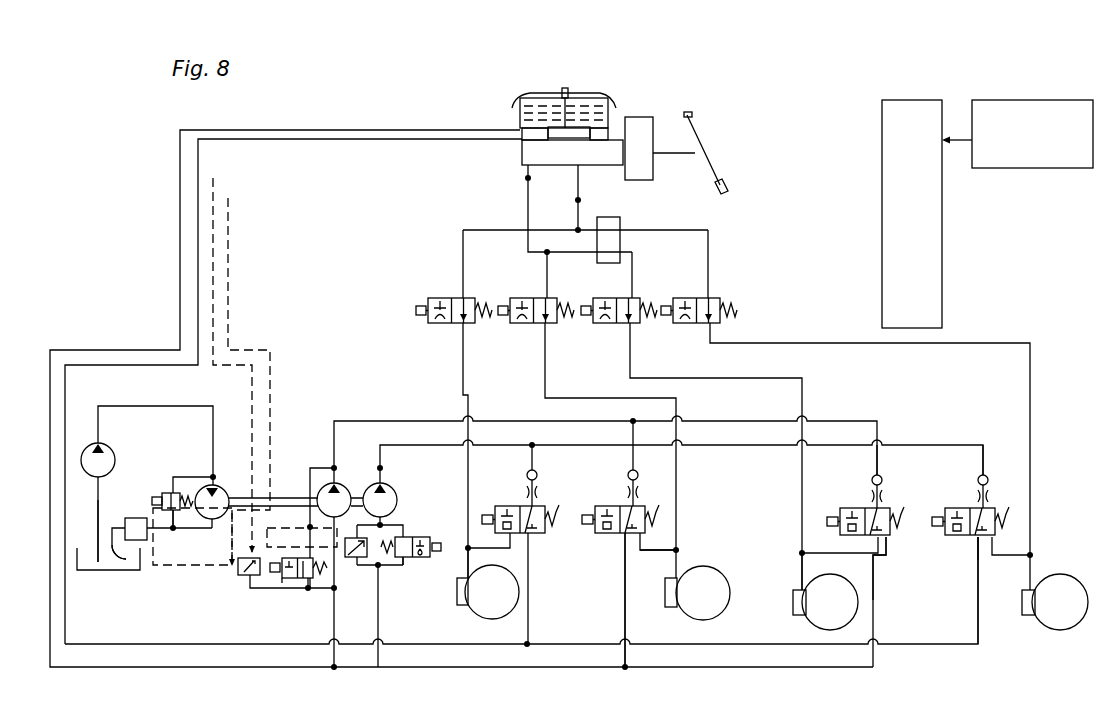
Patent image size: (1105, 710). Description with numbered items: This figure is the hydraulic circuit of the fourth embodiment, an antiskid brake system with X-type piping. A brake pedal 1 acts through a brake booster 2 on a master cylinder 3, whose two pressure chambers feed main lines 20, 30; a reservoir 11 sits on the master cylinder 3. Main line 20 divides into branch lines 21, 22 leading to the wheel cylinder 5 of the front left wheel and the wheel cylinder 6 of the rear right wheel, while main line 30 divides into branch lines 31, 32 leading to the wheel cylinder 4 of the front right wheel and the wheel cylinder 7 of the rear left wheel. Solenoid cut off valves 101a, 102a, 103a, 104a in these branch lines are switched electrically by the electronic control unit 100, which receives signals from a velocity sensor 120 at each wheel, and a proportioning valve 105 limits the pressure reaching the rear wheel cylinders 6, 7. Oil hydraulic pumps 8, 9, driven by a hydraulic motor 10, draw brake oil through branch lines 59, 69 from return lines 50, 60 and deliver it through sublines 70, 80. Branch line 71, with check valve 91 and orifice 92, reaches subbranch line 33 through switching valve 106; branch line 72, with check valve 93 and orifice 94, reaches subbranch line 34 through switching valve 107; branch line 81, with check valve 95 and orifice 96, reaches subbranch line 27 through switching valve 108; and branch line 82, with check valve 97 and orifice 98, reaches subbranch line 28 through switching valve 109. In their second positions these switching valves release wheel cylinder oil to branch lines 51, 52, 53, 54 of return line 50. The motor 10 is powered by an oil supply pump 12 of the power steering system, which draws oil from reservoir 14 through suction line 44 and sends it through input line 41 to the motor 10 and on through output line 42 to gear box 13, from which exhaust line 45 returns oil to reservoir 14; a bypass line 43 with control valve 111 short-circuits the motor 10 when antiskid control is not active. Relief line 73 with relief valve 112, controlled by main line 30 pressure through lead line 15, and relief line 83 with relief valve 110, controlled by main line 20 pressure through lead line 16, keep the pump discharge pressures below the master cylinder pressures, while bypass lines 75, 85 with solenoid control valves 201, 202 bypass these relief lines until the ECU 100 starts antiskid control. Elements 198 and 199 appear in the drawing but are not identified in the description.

The brake pedal 1 is at (729, 186).
The brake booster 2 is at (660, 140).
The master cylinder 3 is at (613, 142).
The wheel cylinder 4 is at (474, 613).
The wheel cylinder 5 is at (714, 572).
The wheel cylinder 6 is at (812, 624).
The wheel cylinder 7 is at (1051, 575).
The oil hydraulic pump 8 is at (396, 490).
The oil hydraulic pump 9 is at (332, 482).
The hydraulic motor 10 is at (223, 488).
The reservoir 11 is at (609, 100).
The oil supply pump 12 is at (110, 450).
The gear box 13 is at (130, 517).
The reservoir 14 is at (103, 572).
The lead line 15 is at (235, 327).
The lead line 16 is at (237, 280).
The main line 20 is at (528, 218).
The branch line 21 is at (593, 398).
The branch line 22 is at (741, 380).
The subbranch line 27 is at (660, 550).
The subbranch line 28 is at (800, 560).
The main line 30 is at (578, 190).
The branch line 31 is at (463, 380).
The branch line 32 is at (949, 343).
The subbranch line 33 is at (468, 530).
The subbranch line 34 is at (1007, 555).
The input line 41 is at (198, 406).
The output line 42 is at (194, 537).
The bypass line 43 is at (170, 492).
The suction line 44 is at (94, 504).
The exhaust line 45 is at (132, 572).
The return line 50 is at (358, 140).
The branch line 51 is at (526, 625).
The branch line 52 is at (978, 640).
The branch line 53 is at (625, 638).
The branch line 54 is at (873, 607).
The branch line 59 is at (381, 624).
The return line 60 is at (361, 130).
The branch line 69 is at (334, 626).
The subline 70 is at (591, 436).
The branch line 71 is at (536, 463).
The branch line 72 is at (986, 450).
The relief line 73 is at (378, 572).
The bypass line 75 is at (402, 525).
The subline 80 is at (520, 420).
The branch line 81 is at (638, 460).
The branch line 82 is at (889, 462).
The relief line 83 is at (249, 590).
The bypass line 85 is at (302, 537).
The check valve 91 is at (537, 476).
The orifice 92 is at (540, 490).
The check valve 93 is at (987, 480).
The orifice 94 is at (989, 494).
The check valve 95 is at (640, 478).
The orifice 96 is at (638, 493).
The check valve 97 is at (886, 479).
The orifice 98 is at (889, 494).
The electronic control unit 100 is at (916, 100).
The cut off valve 101a is at (554, 298).
The cut off valve 102a is at (637, 298).
The cut off valve 103a is at (470, 298).
The cut off valve 104a is at (721, 298).
The proportioning valve 105 is at (622, 226).
The switching valve 106 is at (510, 506).
The switching valve 107 is at (952, 537).
The switching valve 108 is at (605, 533).
The switching valve 109 is at (848, 508).
The relief valve 110 is at (235, 577).
The control valve 111 is at (180, 535).
The relief valve 112 is at (355, 558).
The velocity sensor 120 is at (1027, 100).
The line 198 is at (397, 563).
The line 199 is at (313, 590).
The control valve 201 is at (410, 538).
The control valve 202 is at (300, 578).